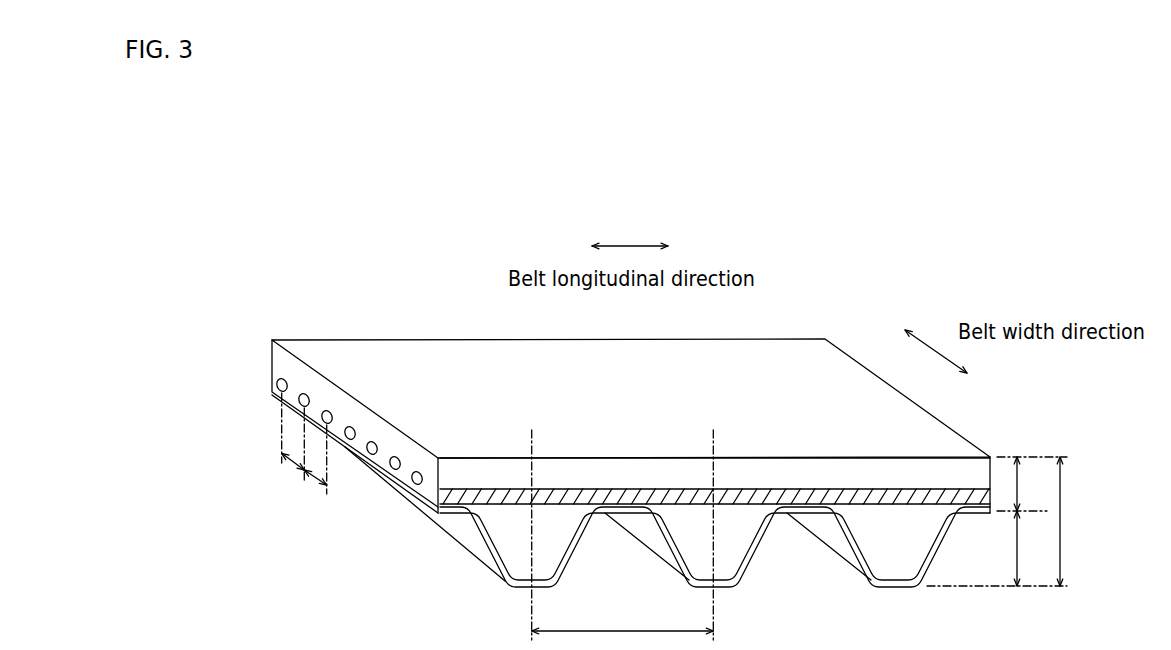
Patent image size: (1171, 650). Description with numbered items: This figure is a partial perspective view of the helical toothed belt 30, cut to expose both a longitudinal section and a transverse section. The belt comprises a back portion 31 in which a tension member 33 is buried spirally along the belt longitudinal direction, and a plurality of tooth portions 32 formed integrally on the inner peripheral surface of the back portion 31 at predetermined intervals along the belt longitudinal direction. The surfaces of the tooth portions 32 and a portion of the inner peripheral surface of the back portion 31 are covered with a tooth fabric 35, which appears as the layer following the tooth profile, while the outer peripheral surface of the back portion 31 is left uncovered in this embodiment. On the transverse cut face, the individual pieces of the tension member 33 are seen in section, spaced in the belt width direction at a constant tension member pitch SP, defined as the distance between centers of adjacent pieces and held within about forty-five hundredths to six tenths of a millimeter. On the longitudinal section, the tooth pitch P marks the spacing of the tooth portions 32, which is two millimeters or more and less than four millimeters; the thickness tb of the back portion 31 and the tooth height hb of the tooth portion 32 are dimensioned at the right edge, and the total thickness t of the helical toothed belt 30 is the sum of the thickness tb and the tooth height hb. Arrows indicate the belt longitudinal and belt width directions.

The helical toothed belt 30 is at (392, 285).
The back portion 31 is at (498, 472).
The tooth portion 32 is at (512, 553).
The tension member 33 is at (304, 394).
The tooth fabric 35 is at (458, 511).
The tension member pitch SP is at (294, 461).
The tooth pitch P is at (623, 540).
The thickness of the back portion tb is at (1032, 484).
The tooth height hb is at (997, 548).
The total thickness t is at (1064, 521).